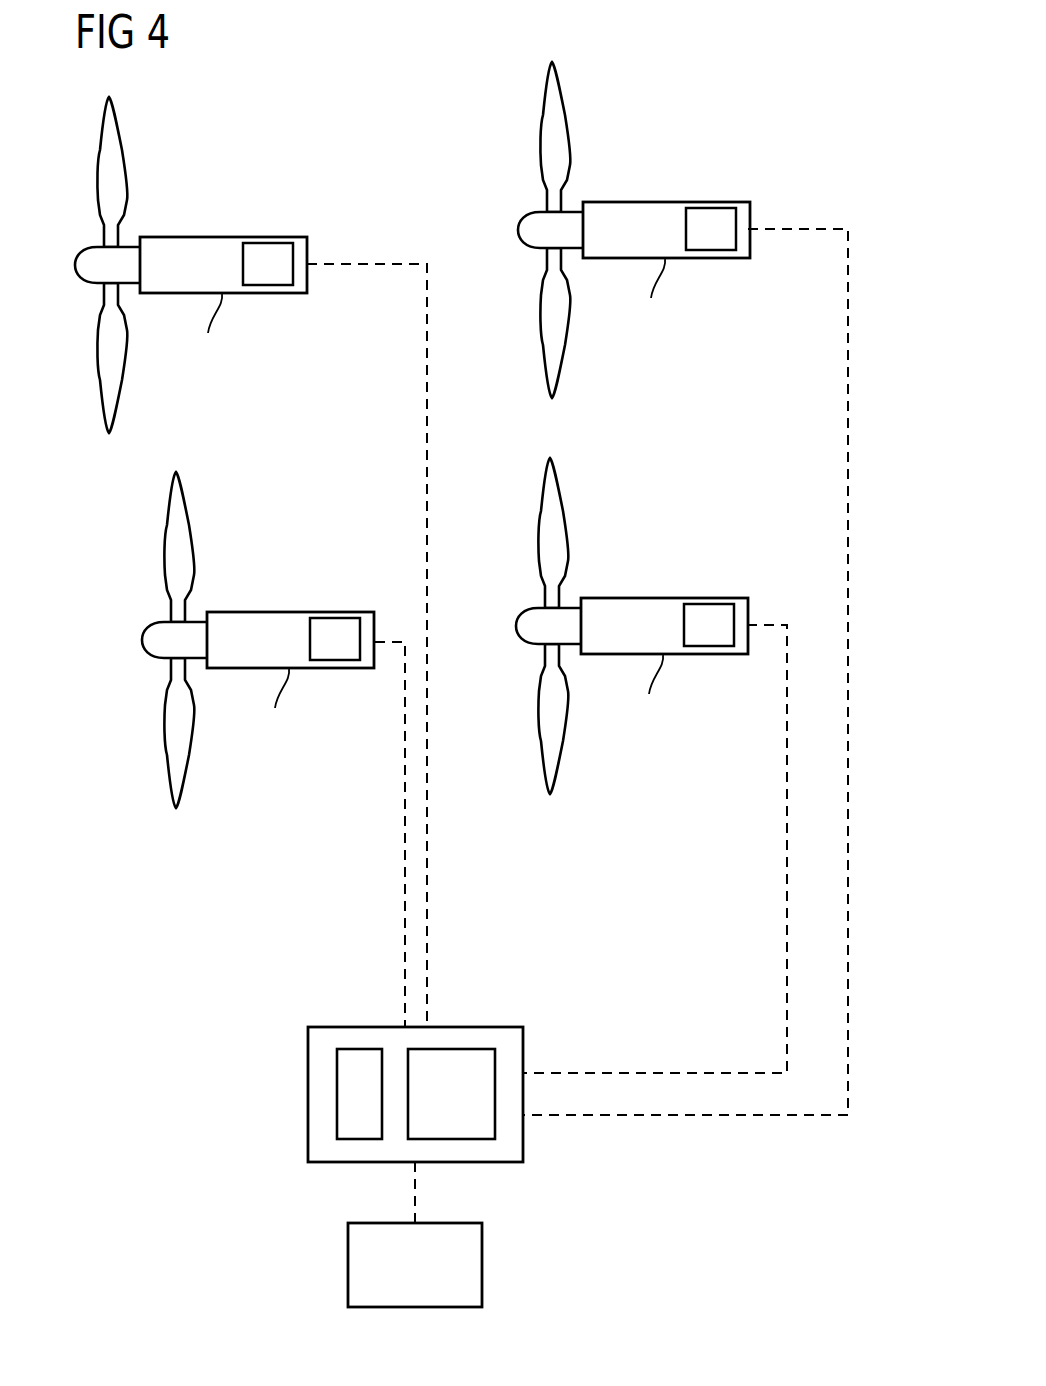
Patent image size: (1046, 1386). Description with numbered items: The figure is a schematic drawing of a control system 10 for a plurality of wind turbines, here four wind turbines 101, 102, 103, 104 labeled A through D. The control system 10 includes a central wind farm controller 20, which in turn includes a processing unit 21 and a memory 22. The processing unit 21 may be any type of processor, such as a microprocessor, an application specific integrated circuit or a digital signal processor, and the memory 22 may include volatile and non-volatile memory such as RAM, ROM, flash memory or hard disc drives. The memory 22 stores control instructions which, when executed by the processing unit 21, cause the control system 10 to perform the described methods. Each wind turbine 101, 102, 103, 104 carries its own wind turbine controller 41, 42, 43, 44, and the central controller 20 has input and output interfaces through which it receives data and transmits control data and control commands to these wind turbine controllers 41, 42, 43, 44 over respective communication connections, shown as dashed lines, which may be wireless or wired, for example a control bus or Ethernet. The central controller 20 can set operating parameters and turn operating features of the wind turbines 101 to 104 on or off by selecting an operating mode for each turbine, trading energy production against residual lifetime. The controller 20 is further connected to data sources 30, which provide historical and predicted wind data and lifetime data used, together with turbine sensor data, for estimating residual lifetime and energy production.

The control system 10 is at (136, 993).
The central controller 20 is at (308, 1063).
The processing unit 21 is at (337, 1113).
The memory 22 is at (455, 1049).
The data sources 30 is at (482, 1264).
The wind turbine controller 41 is at (268, 243).
The wind turbine controller 42 is at (337, 603).
The wind turbine controller 43 is at (713, 193).
The wind turbine controller 44 is at (711, 589).
The wind turbine 101 is at (194, 237).
The wind turbine 102 is at (258, 640).
The wind turbine 103 is at (634, 230).
The wind turbine 104 is at (632, 626).